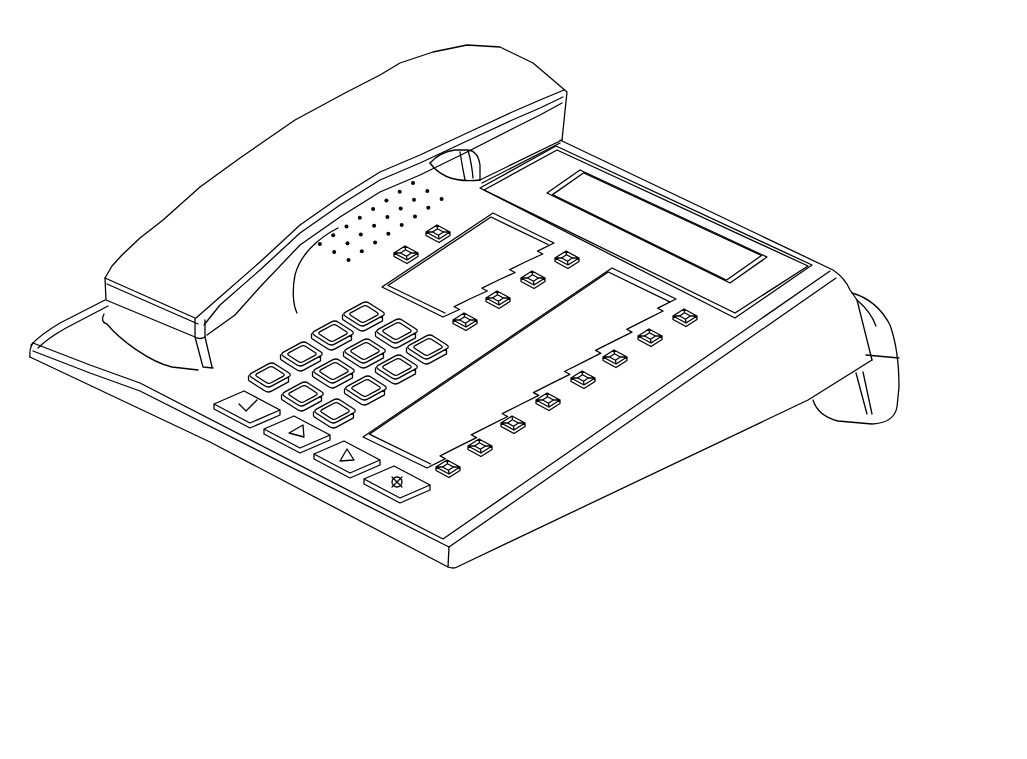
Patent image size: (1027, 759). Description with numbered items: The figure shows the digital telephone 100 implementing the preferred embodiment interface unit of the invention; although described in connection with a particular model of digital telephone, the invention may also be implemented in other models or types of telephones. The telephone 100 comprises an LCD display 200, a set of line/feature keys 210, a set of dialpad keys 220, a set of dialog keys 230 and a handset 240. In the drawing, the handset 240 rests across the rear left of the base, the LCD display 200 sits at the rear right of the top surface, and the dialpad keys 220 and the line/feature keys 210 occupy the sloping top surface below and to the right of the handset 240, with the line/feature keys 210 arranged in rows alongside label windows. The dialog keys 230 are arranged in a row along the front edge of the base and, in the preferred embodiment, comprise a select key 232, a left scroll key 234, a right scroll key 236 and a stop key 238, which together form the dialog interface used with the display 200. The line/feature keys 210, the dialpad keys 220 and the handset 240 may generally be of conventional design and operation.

The digital telephone 100 is at (622, 68).
The LCD display 200 is at (748, 236).
The line/feature keys 210 is at (596, 380).
The dialpad keys 220 is at (286, 356).
The dialog keys 230 is at (228, 408).
The select key 232 is at (228, 424).
The left scroll key 234 is at (298, 448).
The right scroll key 236 is at (352, 476).
The stop key 238 is at (403, 500).
The handset 240 is at (431, 75).